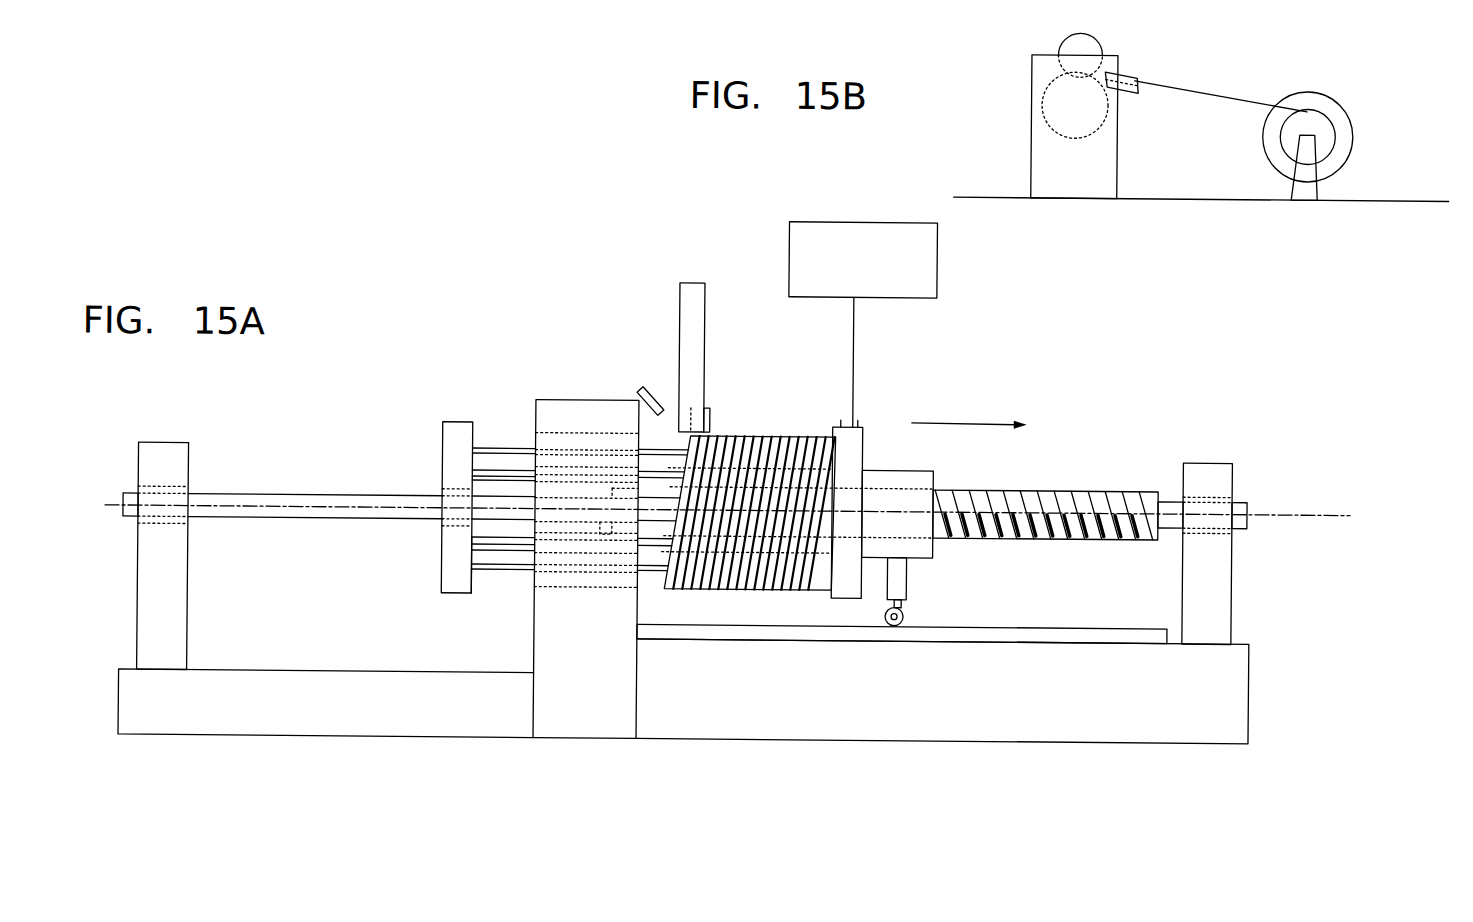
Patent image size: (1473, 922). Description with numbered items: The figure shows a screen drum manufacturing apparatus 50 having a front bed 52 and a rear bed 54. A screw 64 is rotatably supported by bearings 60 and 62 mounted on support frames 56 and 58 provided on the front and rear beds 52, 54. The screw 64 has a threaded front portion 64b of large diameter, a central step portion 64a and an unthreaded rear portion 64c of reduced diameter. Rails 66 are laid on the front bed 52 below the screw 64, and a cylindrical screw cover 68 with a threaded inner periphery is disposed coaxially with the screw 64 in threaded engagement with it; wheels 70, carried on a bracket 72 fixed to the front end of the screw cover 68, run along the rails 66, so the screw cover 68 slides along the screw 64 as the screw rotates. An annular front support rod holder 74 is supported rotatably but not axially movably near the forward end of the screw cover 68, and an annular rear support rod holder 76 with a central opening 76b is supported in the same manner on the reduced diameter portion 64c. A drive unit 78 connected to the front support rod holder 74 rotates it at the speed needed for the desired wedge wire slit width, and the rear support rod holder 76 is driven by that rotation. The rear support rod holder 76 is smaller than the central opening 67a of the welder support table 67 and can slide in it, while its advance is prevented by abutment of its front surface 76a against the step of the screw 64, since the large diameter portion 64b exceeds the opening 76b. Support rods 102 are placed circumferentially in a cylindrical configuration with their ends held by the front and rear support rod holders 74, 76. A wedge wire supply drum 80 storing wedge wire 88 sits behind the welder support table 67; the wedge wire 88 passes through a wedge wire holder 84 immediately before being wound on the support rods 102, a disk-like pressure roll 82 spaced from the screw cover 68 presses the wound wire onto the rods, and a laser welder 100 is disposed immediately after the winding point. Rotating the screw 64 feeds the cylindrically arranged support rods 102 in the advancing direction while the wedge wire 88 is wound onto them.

In FIG. 15A, the screen drum manufacturing apparatus 50 is at (914, 359).
In FIG. 15A, the front bed 52 is at (865, 694).
In FIG. 15A, the rear bed 54 is at (290, 724).
In FIG. 15A, the support frame 56 is at (1232, 568).
In FIG. 15A, the support frame 58 is at (160, 612).
In FIG. 15A, the bearing 60 is at (1208, 495).
In FIG. 15A, the bearing 62 is at (170, 492).
In FIG. 15A, the screw 64 is at (1055, 494).
In FIG. 15A, the central step portion 64a is at (594, 586).
In FIG. 15A, the threaded front portion 64b is at (1108, 494).
In FIG. 15A, the unthreaded rear portion 64c is at (349, 497).
In FIG. 15A, the rails 66 is at (1023, 635).
In FIG. 15A, the welder support table 67 is at (561, 402).
In FIG. 15B, the welder support table 67 is at (1028, 80).
In FIG. 15A, the central opening 67a is at (557, 585).
In FIG. 15A, the screw cover 68 is at (880, 468).
In FIG. 15A, the wheels 70 is at (903, 618).
In FIG. 15A, the roller bracket 72 is at (907, 576).
In FIG. 15A, the front support rod holder 74 is at (837, 424).
In FIG. 15A, the rear support rod holder 76 is at (453, 437).
In FIG. 15A, the front surface 76a is at (479, 540).
In FIG. 15A, the central opening 76b is at (453, 540).
In FIG. 15A, the drive unit 78 is at (786, 255).
In FIG. 15B, the wedge wire supply drum 80 is at (1342, 117).
In FIG. 15A, the pressure roll 82 is at (687, 311).
In FIG. 15B, the pressure roll 82 is at (1082, 32).
In FIG. 15A, the wedge wire holder 84 is at (709, 420).
In FIG. 15B, the wedge wire holder 84 is at (1122, 70).
In FIG. 15A, the wedge wire 88 is at (738, 585).
In FIG. 15B, the wedge wire 88 is at (1042, 118).
In FIG. 15A, the laser welder 100 is at (635, 393).
In FIG. 15A, the support rods 102 is at (503, 449).